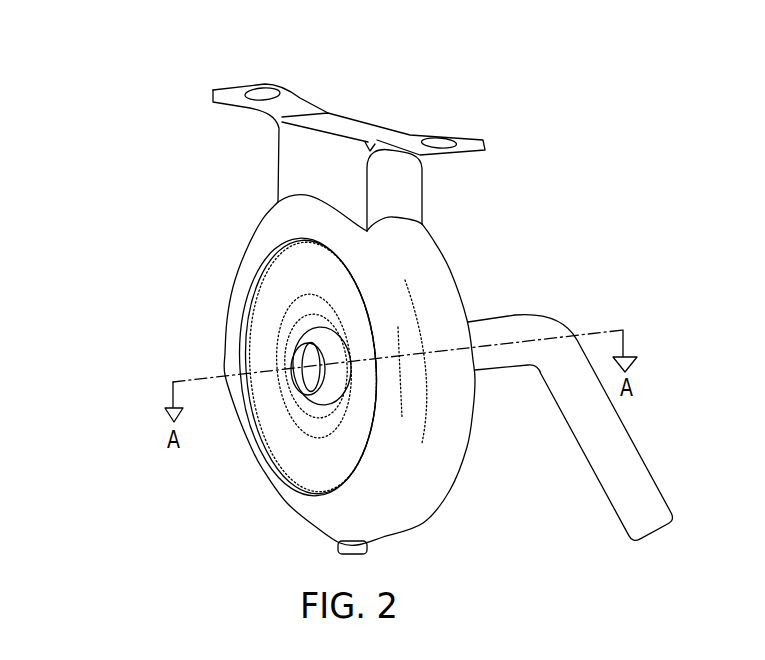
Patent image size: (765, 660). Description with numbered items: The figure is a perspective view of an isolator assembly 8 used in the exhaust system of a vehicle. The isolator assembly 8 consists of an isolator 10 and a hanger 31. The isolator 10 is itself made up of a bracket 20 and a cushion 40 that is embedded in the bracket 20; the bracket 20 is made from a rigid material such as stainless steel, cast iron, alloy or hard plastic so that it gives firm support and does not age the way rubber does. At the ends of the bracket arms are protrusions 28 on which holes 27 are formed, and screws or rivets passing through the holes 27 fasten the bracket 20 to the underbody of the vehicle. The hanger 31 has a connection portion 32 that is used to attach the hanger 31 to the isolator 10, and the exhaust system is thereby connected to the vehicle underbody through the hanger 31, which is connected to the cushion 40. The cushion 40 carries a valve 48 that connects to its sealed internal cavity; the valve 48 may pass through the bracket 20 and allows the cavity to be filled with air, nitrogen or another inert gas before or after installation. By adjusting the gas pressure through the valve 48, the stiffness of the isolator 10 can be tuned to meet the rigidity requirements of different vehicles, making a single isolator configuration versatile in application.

The isolator assembly 8 is at (91, 191).
The isolator 10 is at (253, 238).
The bracket 20 is at (349, 142).
The hole 27 is at (437, 140).
The protrusion 28 is at (297, 107).
The hanger 31 is at (622, 423).
The connection portion 32 is at (313, 335).
The cushion 40 is at (283, 438).
The valve 48 is at (338, 544).